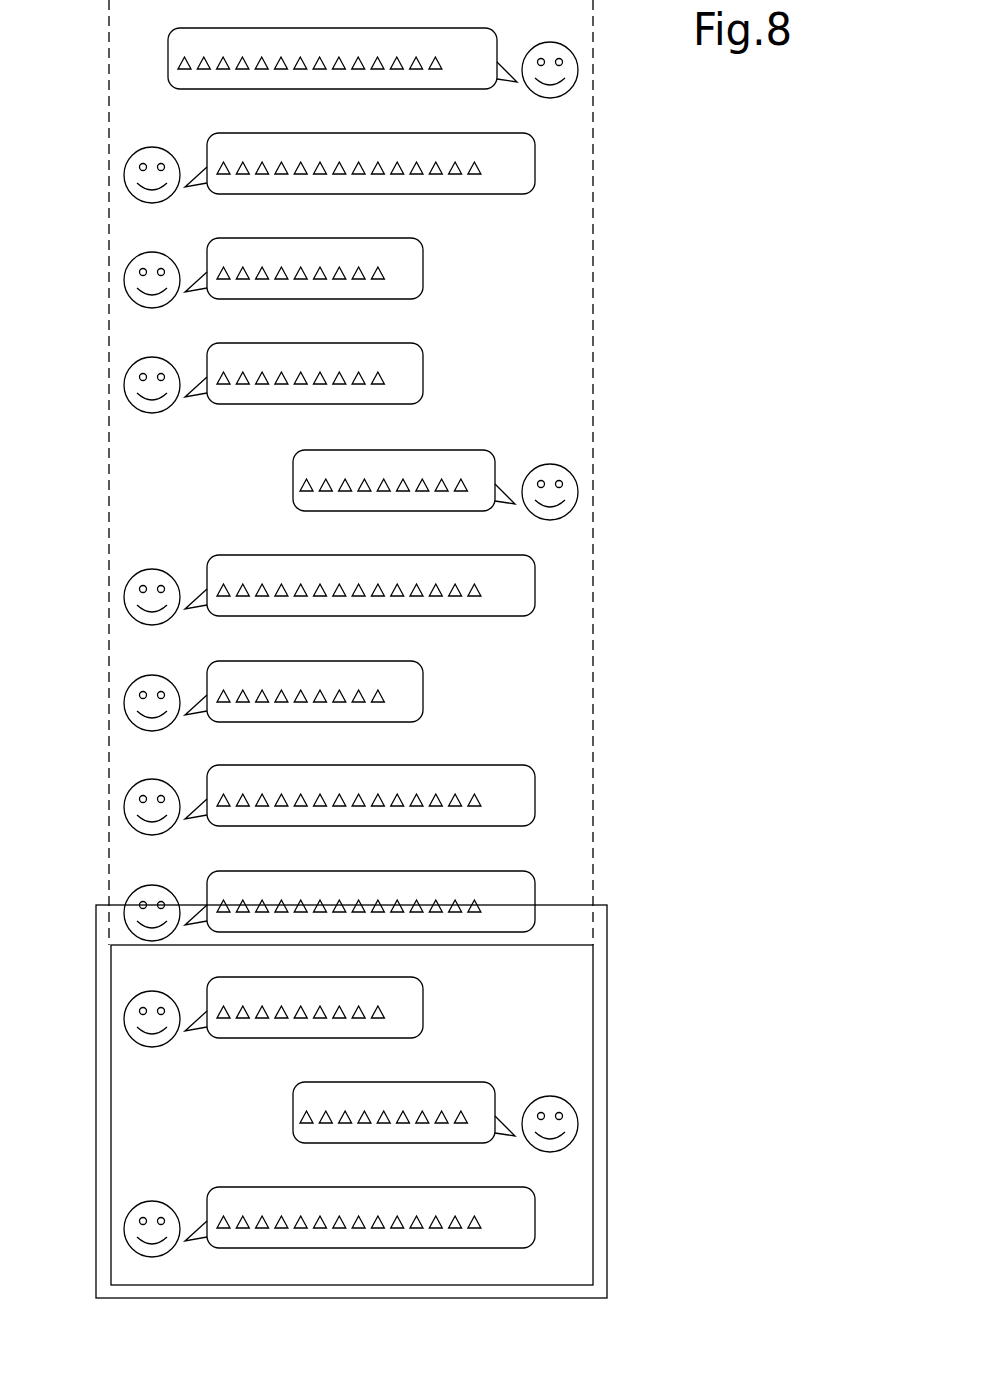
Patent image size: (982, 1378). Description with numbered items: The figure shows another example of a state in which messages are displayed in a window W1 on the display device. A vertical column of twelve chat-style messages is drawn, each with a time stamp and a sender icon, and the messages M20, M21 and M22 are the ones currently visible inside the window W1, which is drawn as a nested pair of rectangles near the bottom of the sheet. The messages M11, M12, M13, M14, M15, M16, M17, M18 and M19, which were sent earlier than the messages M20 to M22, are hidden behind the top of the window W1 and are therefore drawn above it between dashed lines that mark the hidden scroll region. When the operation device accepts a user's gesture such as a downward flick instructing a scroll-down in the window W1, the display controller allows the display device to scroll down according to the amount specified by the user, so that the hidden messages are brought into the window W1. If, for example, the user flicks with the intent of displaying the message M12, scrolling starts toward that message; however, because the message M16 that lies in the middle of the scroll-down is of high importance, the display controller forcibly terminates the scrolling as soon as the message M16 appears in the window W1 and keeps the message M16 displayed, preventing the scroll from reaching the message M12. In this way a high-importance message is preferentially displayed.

The message M11 is at (178, 45).
The message M12 is at (503, 150).
The message M13 is at (405, 255).
The message M14 is at (405, 360).
The message M15 is at (305, 467).
The message M16 is at (503, 572).
The message M17 is at (405, 678).
The message M18 is at (503, 782).
The message M19 is at (503, 888).
The message M20 is at (405, 994).
The message M21 is at (305, 1099).
The message M22 is at (503, 1204).
The window W1 is at (310, 1298).